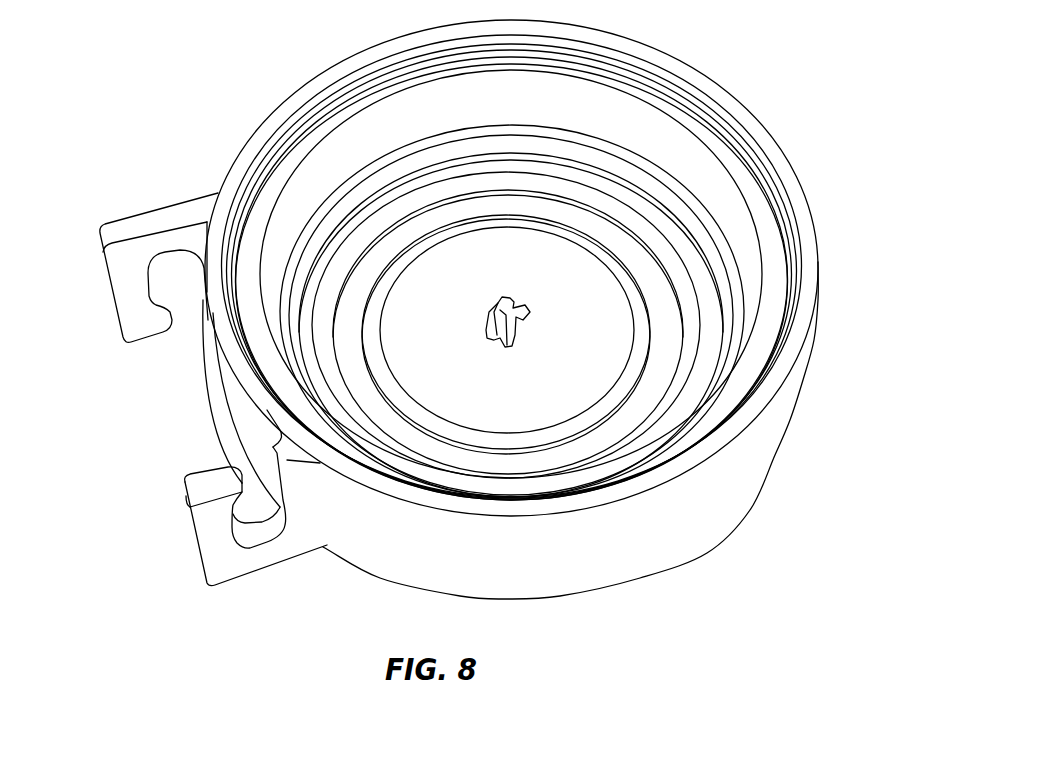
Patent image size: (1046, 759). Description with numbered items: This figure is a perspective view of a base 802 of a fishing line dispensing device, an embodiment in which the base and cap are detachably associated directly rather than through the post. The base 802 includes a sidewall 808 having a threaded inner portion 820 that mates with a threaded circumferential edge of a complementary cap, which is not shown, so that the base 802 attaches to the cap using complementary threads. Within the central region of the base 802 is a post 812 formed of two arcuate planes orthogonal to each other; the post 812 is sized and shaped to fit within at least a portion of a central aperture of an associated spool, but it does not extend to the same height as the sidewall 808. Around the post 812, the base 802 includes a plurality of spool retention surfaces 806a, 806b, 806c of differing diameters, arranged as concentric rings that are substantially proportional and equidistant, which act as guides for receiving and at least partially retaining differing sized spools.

The base 802 is at (188, 98).
The sidewall 808 is at (680, 517).
The threaded inner portion 820 is at (612, 67).
The spool retention surface 806a is at (430, 240).
The spool retention surface 806b is at (472, 180).
The spool retention surface 806c is at (530, 142).
The post 812 is at (527, 310).